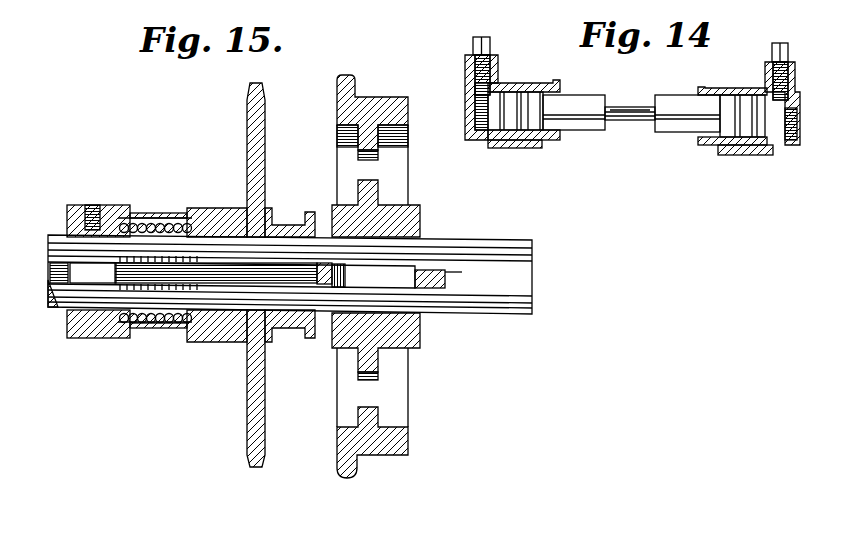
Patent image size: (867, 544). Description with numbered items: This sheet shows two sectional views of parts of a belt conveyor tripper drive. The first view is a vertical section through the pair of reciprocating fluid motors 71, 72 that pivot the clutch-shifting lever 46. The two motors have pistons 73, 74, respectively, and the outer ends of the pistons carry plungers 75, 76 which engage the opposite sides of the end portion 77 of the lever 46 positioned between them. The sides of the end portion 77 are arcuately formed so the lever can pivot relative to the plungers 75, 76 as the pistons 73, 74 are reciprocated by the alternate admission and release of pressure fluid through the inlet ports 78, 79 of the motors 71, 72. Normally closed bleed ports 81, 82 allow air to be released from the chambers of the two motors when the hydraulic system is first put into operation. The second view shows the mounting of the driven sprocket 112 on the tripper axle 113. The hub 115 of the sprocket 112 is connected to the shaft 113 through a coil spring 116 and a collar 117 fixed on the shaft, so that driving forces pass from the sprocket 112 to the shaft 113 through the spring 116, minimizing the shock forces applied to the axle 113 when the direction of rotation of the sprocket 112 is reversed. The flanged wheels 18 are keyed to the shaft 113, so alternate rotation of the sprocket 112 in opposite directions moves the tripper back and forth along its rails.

In FIG. 15, the sprocket 112 is at (257, 136).
In FIG. 15, the axle 113 is at (478, 250).
In FIG. 15, the hub 115 is at (220, 220).
In FIG. 15, the coil spring 116 is at (152, 215).
In FIG. 15, the collar 117 is at (75, 205).
In FIG. 15, the flanged wheels 18 is at (398, 372).
In FIG. 14, the bleed port 82 is at (466, 68).
In FIG. 14, the inlet port 79 is at (466, 103).
In FIG. 14, the fluid motor 72 is at (512, 90).
In FIG. 14, the piston 74 is at (520, 133).
In FIG. 14, the plunger 76 is at (577, 117).
In FIG. 14, the end portion 77 is at (620, 127).
In FIG. 14, the lever 46 is at (638, 124).
In FIG. 14, the plunger 75 is at (672, 110).
In FIG. 14, the fluid motor 71 is at (732, 90).
In FIG. 14, the bleed port 81 is at (797, 77).
In FIG. 14, the inlet port 78 is at (797, 117).
In FIG. 14, the piston 73 is at (748, 143).